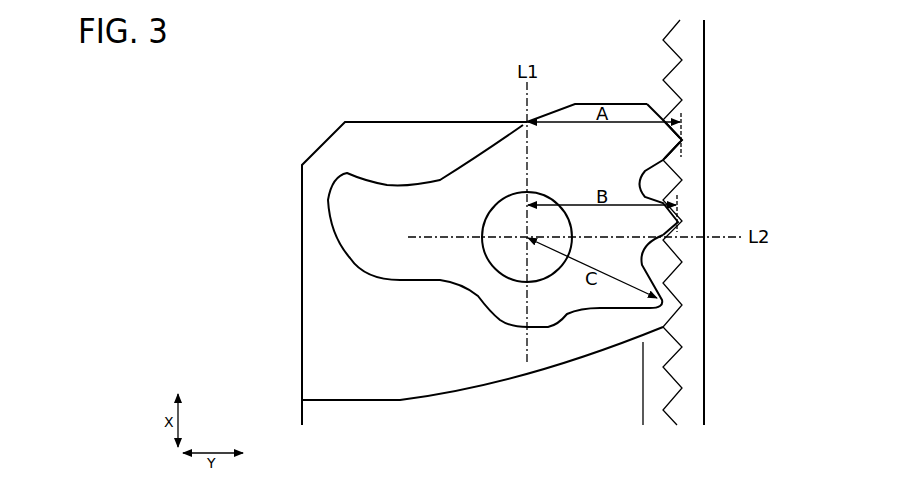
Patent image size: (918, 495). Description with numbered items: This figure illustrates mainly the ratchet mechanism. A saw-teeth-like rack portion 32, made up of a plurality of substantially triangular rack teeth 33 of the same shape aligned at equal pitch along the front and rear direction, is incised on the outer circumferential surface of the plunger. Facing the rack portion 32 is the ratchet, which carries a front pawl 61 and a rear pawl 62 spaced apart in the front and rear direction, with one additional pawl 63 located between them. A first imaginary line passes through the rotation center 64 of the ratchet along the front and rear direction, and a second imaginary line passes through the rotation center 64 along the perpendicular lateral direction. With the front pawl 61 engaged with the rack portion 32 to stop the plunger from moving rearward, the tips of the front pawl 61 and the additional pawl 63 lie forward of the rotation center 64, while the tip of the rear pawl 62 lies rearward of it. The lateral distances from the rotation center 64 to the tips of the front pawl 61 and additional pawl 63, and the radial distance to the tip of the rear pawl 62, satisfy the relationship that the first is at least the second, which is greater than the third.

The rack portion 32 is at (678, 325).
The rack teeth 33 is at (669, 121).
The front pawl 61 is at (683, 142).
The rear pawl 62 is at (655, 294).
The additional pawl 63 is at (667, 222).
The rotation center 64 is at (524, 231).